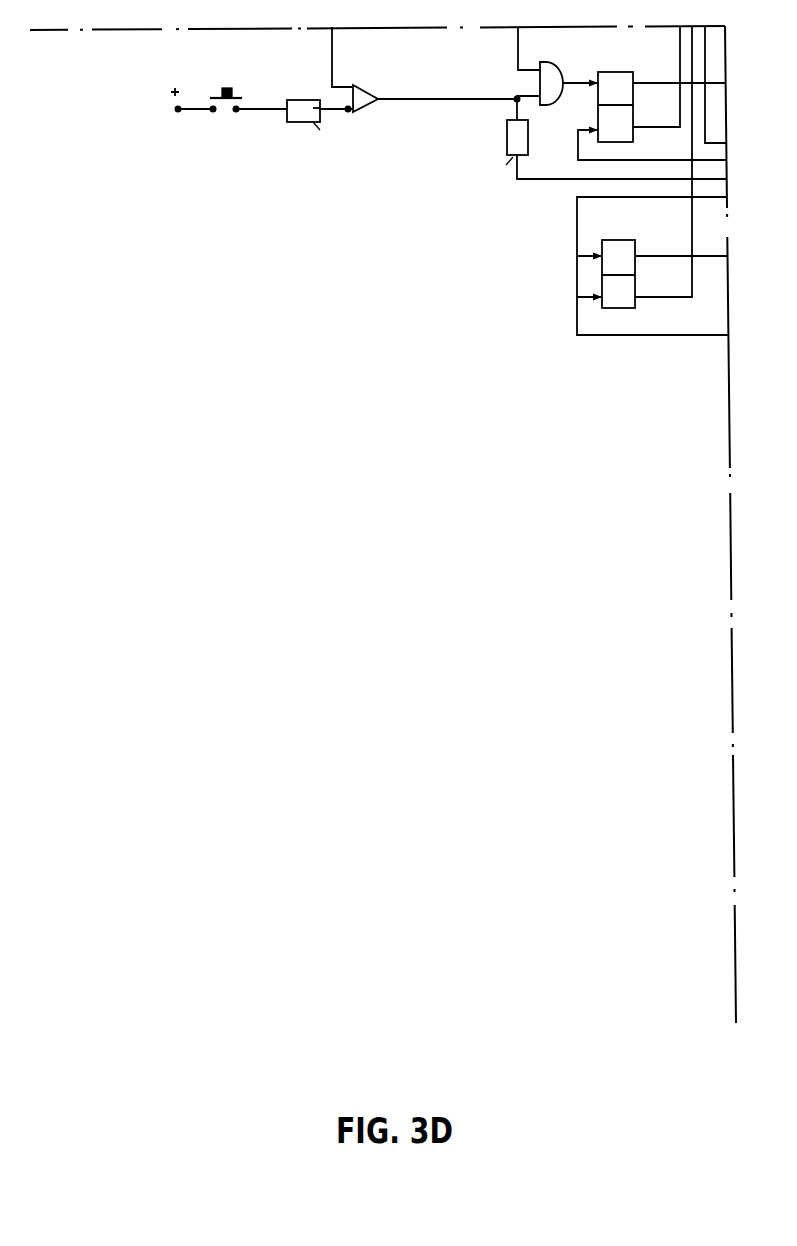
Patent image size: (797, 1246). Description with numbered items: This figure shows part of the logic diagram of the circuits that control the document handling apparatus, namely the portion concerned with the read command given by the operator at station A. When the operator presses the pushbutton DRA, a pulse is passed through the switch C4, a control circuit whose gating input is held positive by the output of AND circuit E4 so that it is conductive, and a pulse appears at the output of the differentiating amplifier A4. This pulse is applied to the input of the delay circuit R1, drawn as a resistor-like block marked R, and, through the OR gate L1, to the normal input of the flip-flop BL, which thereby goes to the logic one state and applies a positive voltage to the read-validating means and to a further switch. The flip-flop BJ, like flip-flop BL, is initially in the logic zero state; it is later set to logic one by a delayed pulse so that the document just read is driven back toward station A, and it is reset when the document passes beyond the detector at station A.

The pushbutton DRA is at (228, 78).
The differentiating amplifier A4 is at (304, 112).
The switch C4 is at (368, 92).
The OR gate L1 is at (551, 75).
The flip-flop BL is at (635, 97).
The resistor of delay circuit R is at (546, 148).
The delay circuit R1 is at (510, 156).
The flip-flop BJ is at (617, 270).